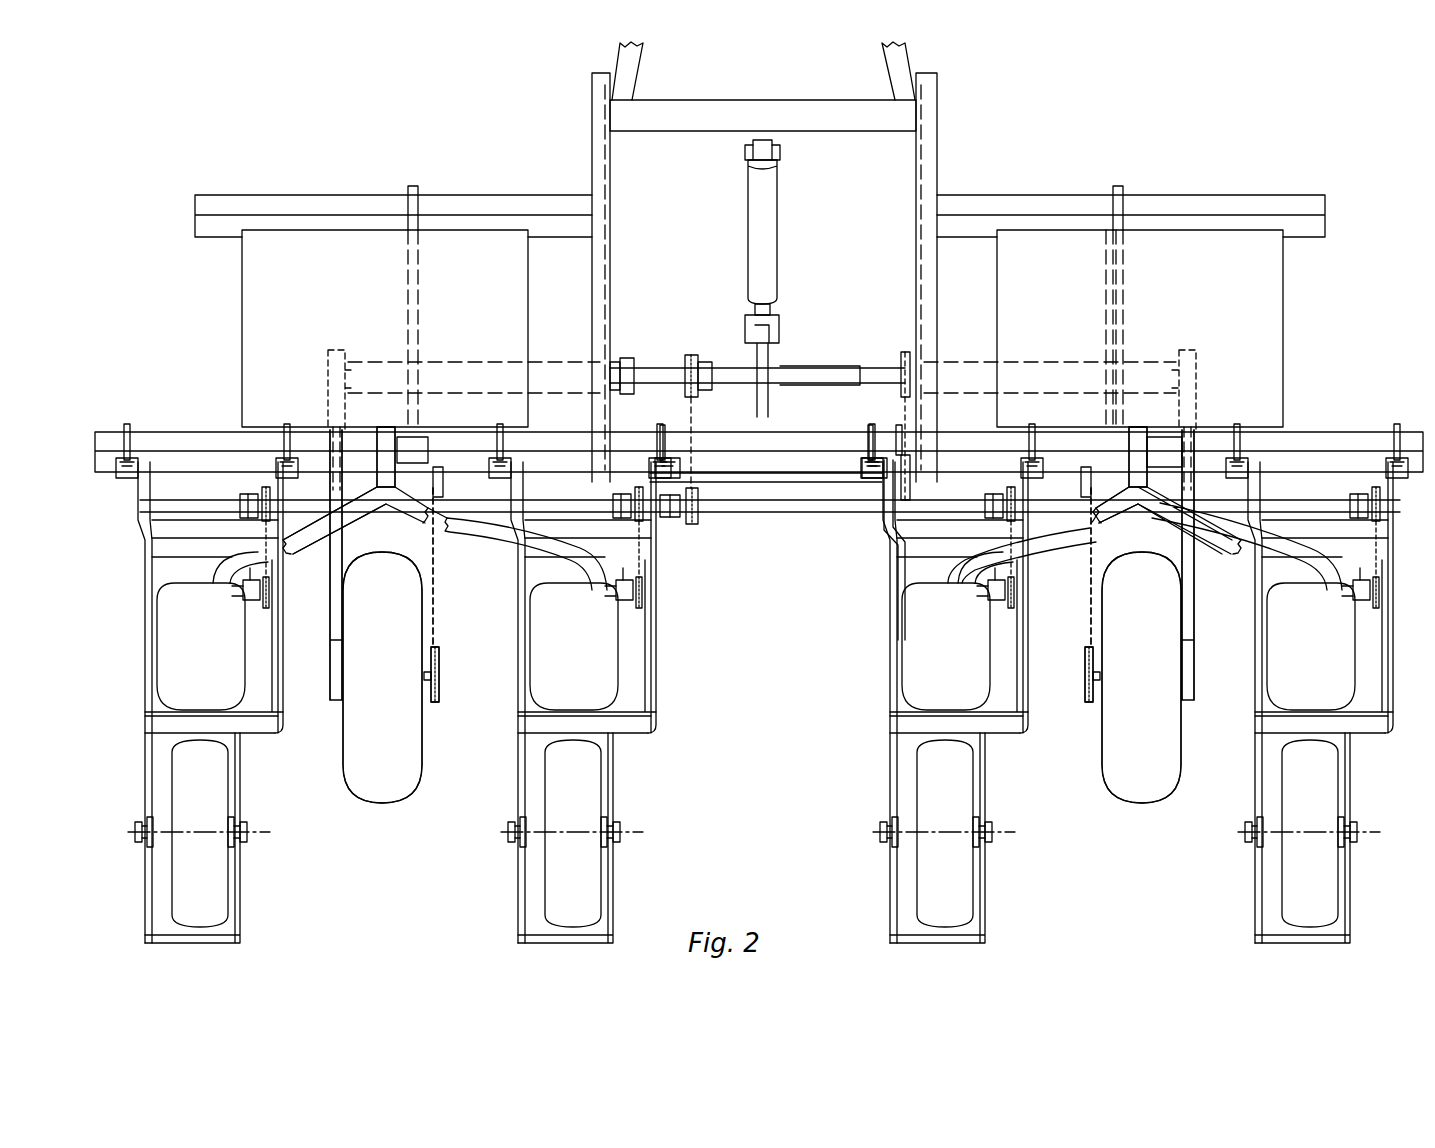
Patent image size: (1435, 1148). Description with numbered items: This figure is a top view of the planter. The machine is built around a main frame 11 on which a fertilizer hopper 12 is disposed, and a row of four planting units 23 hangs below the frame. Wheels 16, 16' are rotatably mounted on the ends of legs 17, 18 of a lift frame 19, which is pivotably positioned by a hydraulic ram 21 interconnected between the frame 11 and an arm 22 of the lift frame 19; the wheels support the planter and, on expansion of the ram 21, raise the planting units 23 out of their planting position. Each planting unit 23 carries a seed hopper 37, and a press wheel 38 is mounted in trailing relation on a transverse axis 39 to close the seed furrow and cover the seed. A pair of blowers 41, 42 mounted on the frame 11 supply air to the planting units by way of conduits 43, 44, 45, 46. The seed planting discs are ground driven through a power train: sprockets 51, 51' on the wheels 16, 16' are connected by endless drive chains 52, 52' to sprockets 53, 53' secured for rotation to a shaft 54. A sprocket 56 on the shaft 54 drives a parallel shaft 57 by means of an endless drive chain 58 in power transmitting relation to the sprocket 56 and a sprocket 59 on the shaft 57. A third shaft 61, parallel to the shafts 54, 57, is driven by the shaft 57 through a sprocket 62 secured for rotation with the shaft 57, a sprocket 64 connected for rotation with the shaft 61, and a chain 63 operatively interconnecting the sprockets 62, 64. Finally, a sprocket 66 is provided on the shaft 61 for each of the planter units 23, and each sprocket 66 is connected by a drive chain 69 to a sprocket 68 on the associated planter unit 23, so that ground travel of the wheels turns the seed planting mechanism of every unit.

The main frame 11 is at (935, 162).
The fertilizer hopper 12 is at (242, 283).
The wheel 16 is at (404, 677).
The wheel 16' is at (1163, 677).
The leg 17 is at (330, 580).
The leg 18 is at (1194, 598).
The lift frame 19 is at (830, 368).
The hydraulic ram 21 is at (777, 232).
The arm 22 is at (745, 350).
The planting unit 23 is at (283, 738).
The seed hopper 37 is at (157, 683).
The press wheel 38 is at (218, 893).
The transverse axis 39 is at (255, 832).
The blower 41 is at (377, 450).
The blower 42 is at (1147, 455).
The conduit 43 is at (338, 520).
The conduit 44 is at (470, 555).
The conduit 45 is at (1043, 560).
The conduit 46 is at (1145, 525).
The sprocket 51 is at (462, 670).
The sprocket 51' is at (1116, 684).
The endless drive chain 52 is at (463, 567).
The endless drive chain 52' is at (1060, 567).
The sprocket 53 is at (438, 430).
The sprocket 53' is at (1106, 434).
The shaft 54 is at (828, 482).
The sprocket 56 is at (898, 505).
The parallel shaft 57 is at (822, 385).
The endless drive chain 58 is at (898, 425).
The sprocket 59 is at (903, 352).
The third shaft 61 is at (750, 512).
The sprocket 62 is at (688, 355).
The chain 63 is at (696, 420).
The sprocket 64 is at (692, 524).
The sprocket 66 is at (258, 497).
The sprocket 68 is at (250, 605).
The drive chain 69 is at (262, 528).